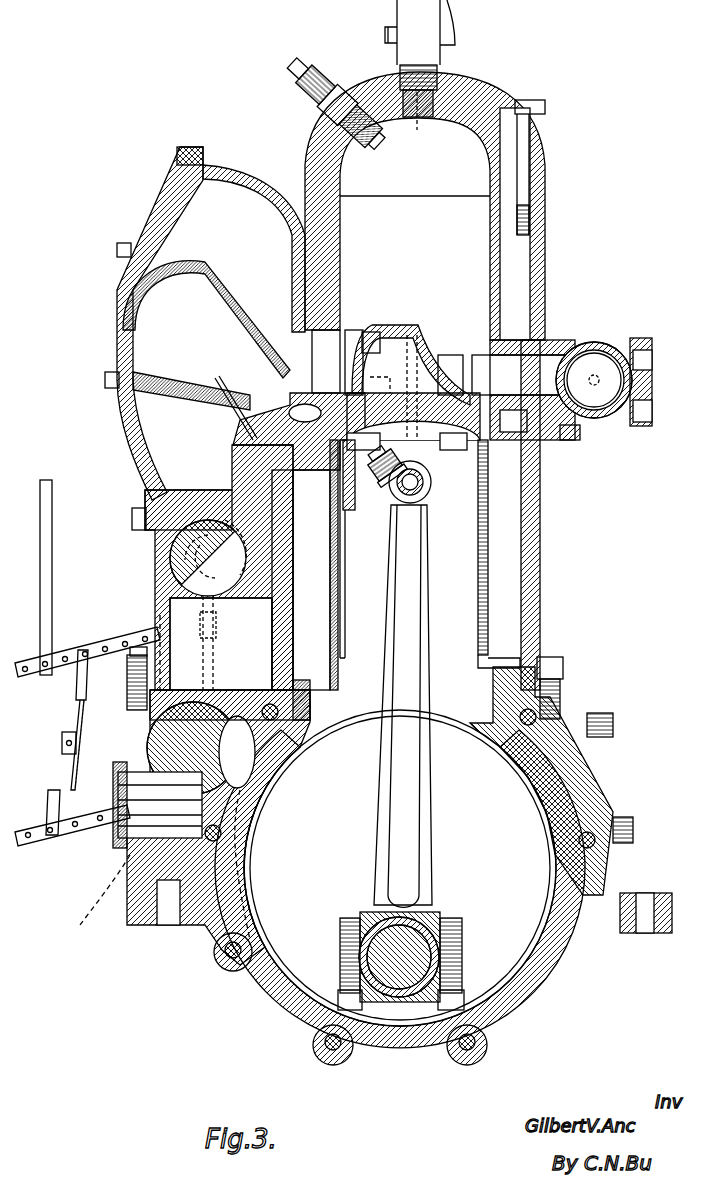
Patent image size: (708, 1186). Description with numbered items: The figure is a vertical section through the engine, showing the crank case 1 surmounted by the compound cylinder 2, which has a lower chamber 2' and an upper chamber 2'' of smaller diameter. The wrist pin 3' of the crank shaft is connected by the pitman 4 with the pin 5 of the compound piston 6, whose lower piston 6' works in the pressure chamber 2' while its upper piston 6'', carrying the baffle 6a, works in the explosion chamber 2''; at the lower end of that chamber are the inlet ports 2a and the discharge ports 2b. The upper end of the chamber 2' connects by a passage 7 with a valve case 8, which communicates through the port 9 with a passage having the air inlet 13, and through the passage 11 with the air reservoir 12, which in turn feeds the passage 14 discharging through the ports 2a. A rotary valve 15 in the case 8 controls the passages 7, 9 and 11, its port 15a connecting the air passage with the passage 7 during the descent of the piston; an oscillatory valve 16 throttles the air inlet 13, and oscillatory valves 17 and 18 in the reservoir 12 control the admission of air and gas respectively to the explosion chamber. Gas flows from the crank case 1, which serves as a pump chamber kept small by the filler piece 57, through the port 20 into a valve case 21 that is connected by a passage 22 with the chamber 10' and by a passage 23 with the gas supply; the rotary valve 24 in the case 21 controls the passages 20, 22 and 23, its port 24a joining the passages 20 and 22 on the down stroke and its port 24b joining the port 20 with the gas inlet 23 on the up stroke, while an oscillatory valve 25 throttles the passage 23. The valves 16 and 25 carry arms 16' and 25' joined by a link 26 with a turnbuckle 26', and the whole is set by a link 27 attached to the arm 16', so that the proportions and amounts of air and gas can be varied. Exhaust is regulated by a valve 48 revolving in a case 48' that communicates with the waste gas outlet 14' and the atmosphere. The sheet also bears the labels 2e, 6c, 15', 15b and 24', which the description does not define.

The crank case 1 is at (300, 1000).
The compound cylinder 2 is at (452, 170).
The lower chamber 2' is at (565, 515).
The upper chamber 2'' is at (554, 274).
The inlet ports 2a is at (378, 335).
The discharge ports 2b is at (480, 356).
The spark plug 2e is at (366, 138).
The wrist pin 3' is at (418, 961).
The pitman 4 is at (430, 828).
The pin 5 is at (388, 492).
The compound piston 6 is at (443, 507).
The piston 6' is at (340, 706).
The piston 6'' is at (525, 554).
The baffle 6a is at (408, 332).
The piston skirt edge 6c is at (342, 658).
The passage 7 is at (281, 500).
The valve chamber or case 8 is at (170, 578).
The port 9 is at (221, 644).
The chamber 10' is at (306, 580).
The passage 11 is at (200, 506).
The air reservoir 12 is at (148, 398).
The air inlet 13 is at (163, 620).
The passage 14 is at (367, 346).
The waste gas outlet 14' is at (582, 445).
The rotary valve 15 is at (208, 605).
The valve seat 15' is at (153, 547).
The port 15a is at (185, 562).
The valve seat ring 15b is at (230, 592).
The oscillatory valve 16 is at (119, 678).
The arm 16' is at (87, 672).
The oscillatory valve 17 is at (222, 268).
The oscillatory valve 18 is at (240, 402).
The port 20 is at (253, 745).
The valve chamber or case 21 is at (160, 746).
The passage 22 is at (248, 692).
The passage 23 is at (125, 822).
The rotary valve 24 is at (206, 827).
The cover edge 24' is at (265, 865).
The port 24a is at (235, 790).
The port 24b is at (150, 712).
The oscillatory valve 25 is at (97, 890).
The arm 25' is at (72, 839).
The link 26 is at (53, 742).
The turnbuckle 26' is at (47, 752).
The link 27 is at (43, 583).
The valve 48 is at (610, 366).
The case 48' is at (594, 357).
The filler piece 57 is at (500, 678).